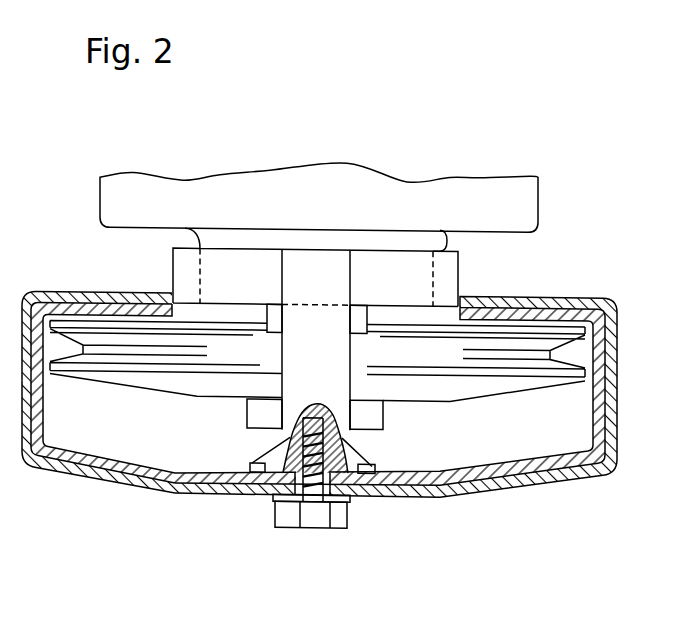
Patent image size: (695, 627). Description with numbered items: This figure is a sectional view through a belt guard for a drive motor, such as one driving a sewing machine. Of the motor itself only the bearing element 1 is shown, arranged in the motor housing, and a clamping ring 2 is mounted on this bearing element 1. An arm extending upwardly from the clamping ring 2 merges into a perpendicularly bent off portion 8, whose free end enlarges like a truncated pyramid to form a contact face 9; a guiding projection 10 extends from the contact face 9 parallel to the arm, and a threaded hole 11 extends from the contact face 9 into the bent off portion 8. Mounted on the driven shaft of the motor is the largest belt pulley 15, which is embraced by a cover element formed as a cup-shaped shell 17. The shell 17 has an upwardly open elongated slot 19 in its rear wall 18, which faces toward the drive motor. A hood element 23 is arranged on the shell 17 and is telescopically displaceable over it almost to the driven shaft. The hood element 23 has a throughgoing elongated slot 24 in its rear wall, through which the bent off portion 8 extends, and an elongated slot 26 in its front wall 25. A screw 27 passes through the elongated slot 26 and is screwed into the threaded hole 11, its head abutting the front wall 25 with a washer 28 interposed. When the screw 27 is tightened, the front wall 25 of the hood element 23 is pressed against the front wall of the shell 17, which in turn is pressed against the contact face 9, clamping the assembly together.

The bearing element 1 is at (440, 240).
The clamping ring 2 is at (190, 256).
The bent off portion 8 is at (333, 356).
The contact face 9 is at (257, 465).
The guiding projection 10 is at (290, 474).
The threaded hole 11 is at (292, 430).
The largest belt pulley 15 is at (140, 371).
The cup-shaped shell 17 is at (107, 489).
The rear wall 18 is at (62, 299).
The elongated slot 19 is at (417, 310).
The hood element 23 is at (635, 380).
The elongated slot 24 is at (463, 292).
The front wall 25 is at (413, 495).
The elongated slot 26 is at (298, 501).
The screw 27 is at (340, 514).
The washer 28 is at (345, 495).